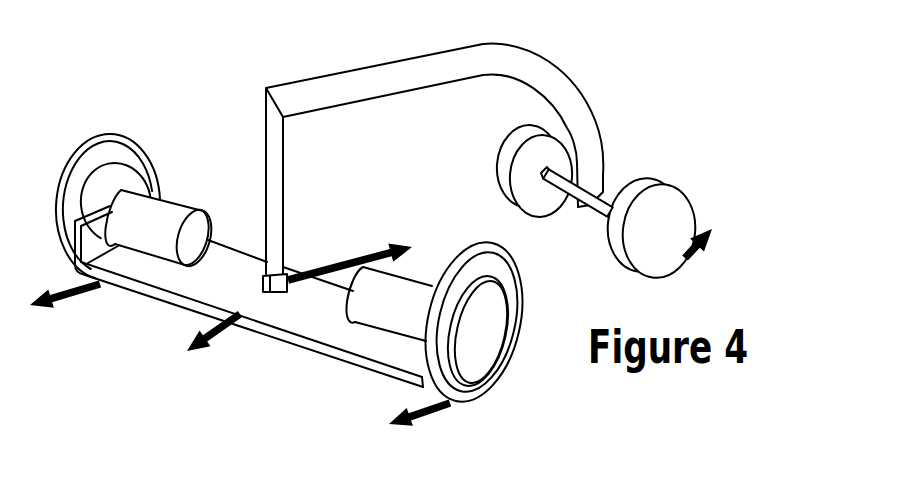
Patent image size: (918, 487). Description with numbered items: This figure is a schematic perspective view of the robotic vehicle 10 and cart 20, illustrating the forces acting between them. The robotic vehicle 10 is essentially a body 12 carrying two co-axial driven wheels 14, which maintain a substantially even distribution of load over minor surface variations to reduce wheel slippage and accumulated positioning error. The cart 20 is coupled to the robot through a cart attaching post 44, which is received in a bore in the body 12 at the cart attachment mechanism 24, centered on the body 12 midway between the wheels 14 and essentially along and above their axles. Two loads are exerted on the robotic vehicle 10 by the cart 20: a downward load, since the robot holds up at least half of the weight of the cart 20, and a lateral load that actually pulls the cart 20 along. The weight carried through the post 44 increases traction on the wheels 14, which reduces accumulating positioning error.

The robotic vehicle 10 is at (146, 111).
The body 12 is at (185, 281).
The driven wheels 14 is at (143, 163).
The cart 20 is at (568, 98).
The cart attachment mechanism 24 is at (274, 293).
The cart attaching post 44 is at (276, 182).